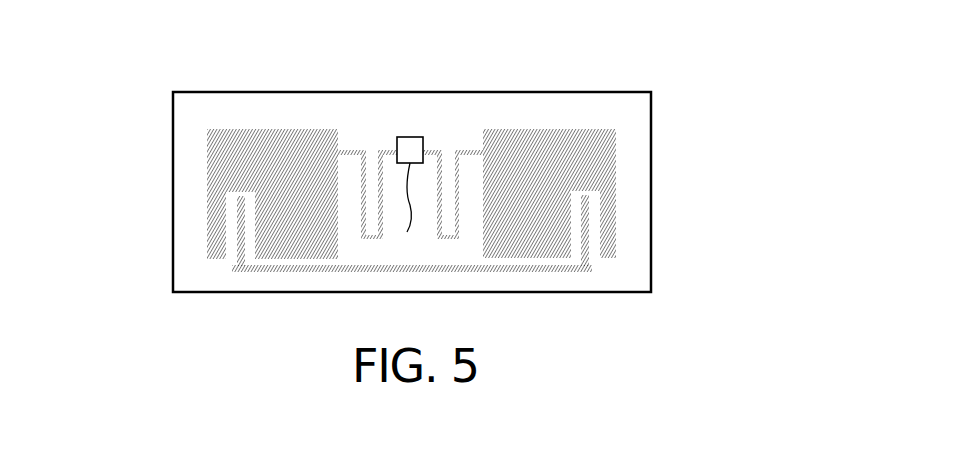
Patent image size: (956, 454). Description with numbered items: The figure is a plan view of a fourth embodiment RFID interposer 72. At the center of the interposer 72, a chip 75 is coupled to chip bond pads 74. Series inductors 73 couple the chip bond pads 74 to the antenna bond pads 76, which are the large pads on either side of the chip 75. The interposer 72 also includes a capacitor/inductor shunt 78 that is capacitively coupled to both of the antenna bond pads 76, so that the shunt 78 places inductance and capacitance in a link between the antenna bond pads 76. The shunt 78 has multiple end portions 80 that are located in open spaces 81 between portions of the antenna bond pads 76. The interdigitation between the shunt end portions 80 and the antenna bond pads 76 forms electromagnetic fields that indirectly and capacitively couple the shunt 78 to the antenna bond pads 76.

The RFID interposer 72 is at (147, 81).
The series inductors 73 is at (371, 125).
The chip bond pads 74 is at (433, 150).
The chip 75 is at (413, 211).
The antenna bond pads 76 is at (276, 128).
The capacitor/inductor shunt 78 is at (365, 282).
The end portions 80 is at (249, 261).
The open spaces 81 is at (254, 264).